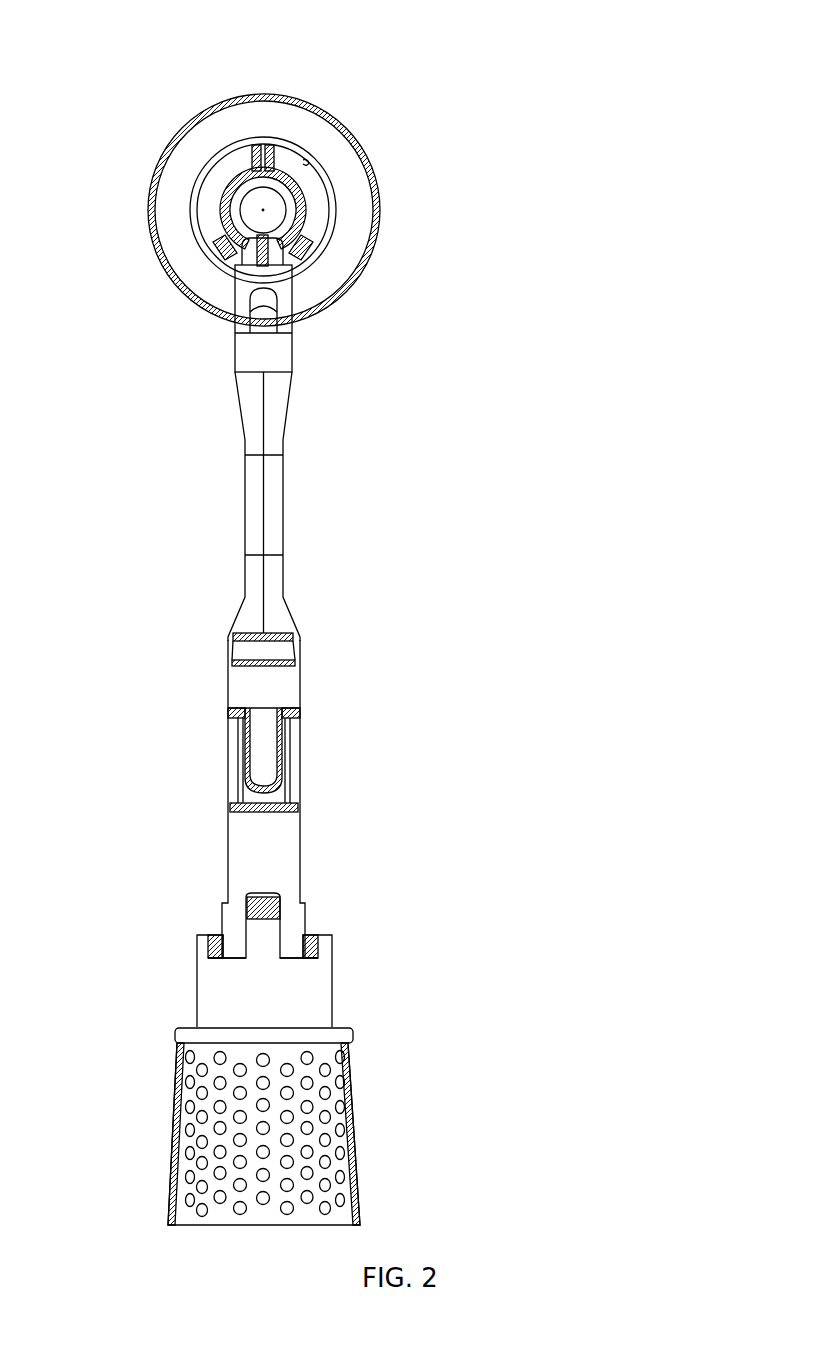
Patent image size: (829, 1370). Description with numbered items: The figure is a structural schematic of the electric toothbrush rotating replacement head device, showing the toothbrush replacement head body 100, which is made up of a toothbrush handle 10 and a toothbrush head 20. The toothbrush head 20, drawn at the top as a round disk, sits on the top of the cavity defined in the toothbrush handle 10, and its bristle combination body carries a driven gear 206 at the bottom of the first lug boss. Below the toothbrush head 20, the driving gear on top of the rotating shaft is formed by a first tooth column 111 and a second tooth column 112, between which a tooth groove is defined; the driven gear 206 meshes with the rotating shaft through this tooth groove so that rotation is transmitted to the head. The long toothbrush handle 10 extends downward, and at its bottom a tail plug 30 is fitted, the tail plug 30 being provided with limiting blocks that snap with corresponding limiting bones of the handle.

The toothbrush head 20 is at (347, 163).
The driven gear 206 is at (283, 258).
The first tooth column 111 is at (237, 265).
The second tooth column 112 is at (293, 272).
The toothbrush handle 10 is at (280, 490).
The toothbrush replacement head body 100 is at (293, 618).
The tail plug 30 is at (353, 1182).